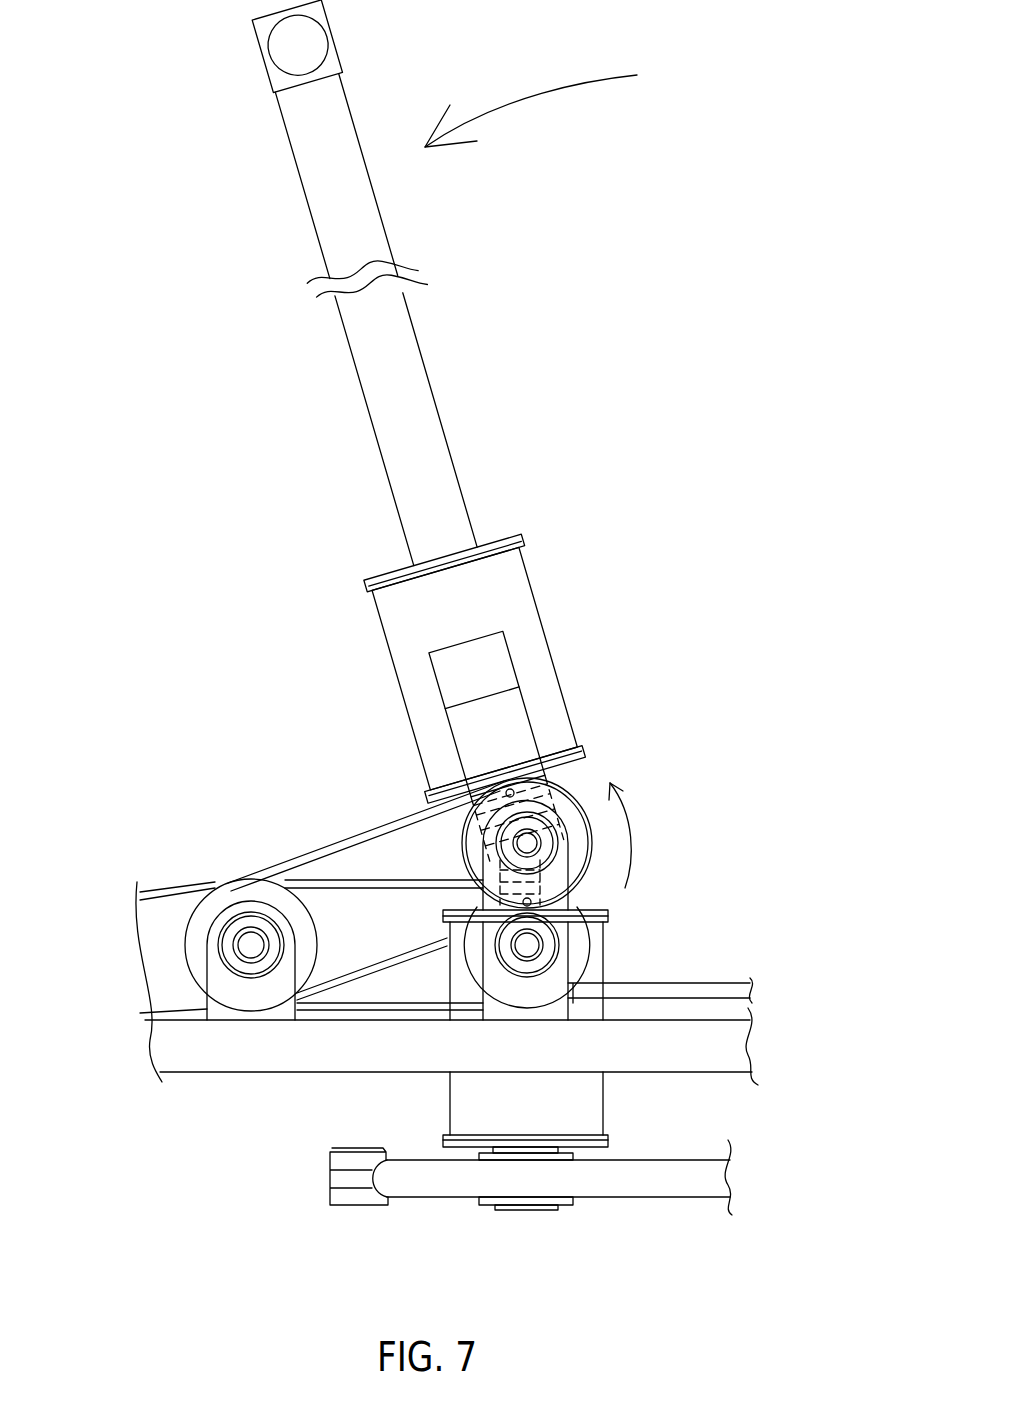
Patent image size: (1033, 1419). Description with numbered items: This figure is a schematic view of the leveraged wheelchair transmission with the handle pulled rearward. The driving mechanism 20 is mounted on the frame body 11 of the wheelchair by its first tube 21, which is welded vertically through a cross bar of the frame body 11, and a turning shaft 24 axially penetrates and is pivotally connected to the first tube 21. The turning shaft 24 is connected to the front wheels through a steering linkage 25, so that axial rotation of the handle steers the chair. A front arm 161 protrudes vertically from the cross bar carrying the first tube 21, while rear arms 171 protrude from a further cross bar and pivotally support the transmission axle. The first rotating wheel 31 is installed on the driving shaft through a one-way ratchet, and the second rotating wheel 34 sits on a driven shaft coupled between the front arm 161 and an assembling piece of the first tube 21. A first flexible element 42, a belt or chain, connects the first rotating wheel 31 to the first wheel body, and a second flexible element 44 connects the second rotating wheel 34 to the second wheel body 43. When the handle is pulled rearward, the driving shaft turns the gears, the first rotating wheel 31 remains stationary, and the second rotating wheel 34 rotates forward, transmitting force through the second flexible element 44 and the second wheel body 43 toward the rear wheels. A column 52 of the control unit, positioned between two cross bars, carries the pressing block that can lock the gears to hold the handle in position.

The driving mechanism 20 is at (352, 514).
The first rotating wheel 31 is at (567, 817).
The second rotating wheel 34 is at (582, 952).
The first flexible element 42 is at (218, 903).
The second wheel body 43 is at (212, 883).
The second flexible element 44 is at (377, 1005).
The rear arm 171 is at (232, 1002).
The front arm 161 is at (548, 1001).
The column 52 is at (703, 988).
The frame body 11 is at (705, 1060).
The steering linkage 25 is at (650, 1185).
The first tube 21 is at (457, 1098).
The turning shaft 24 is at (528, 1210).